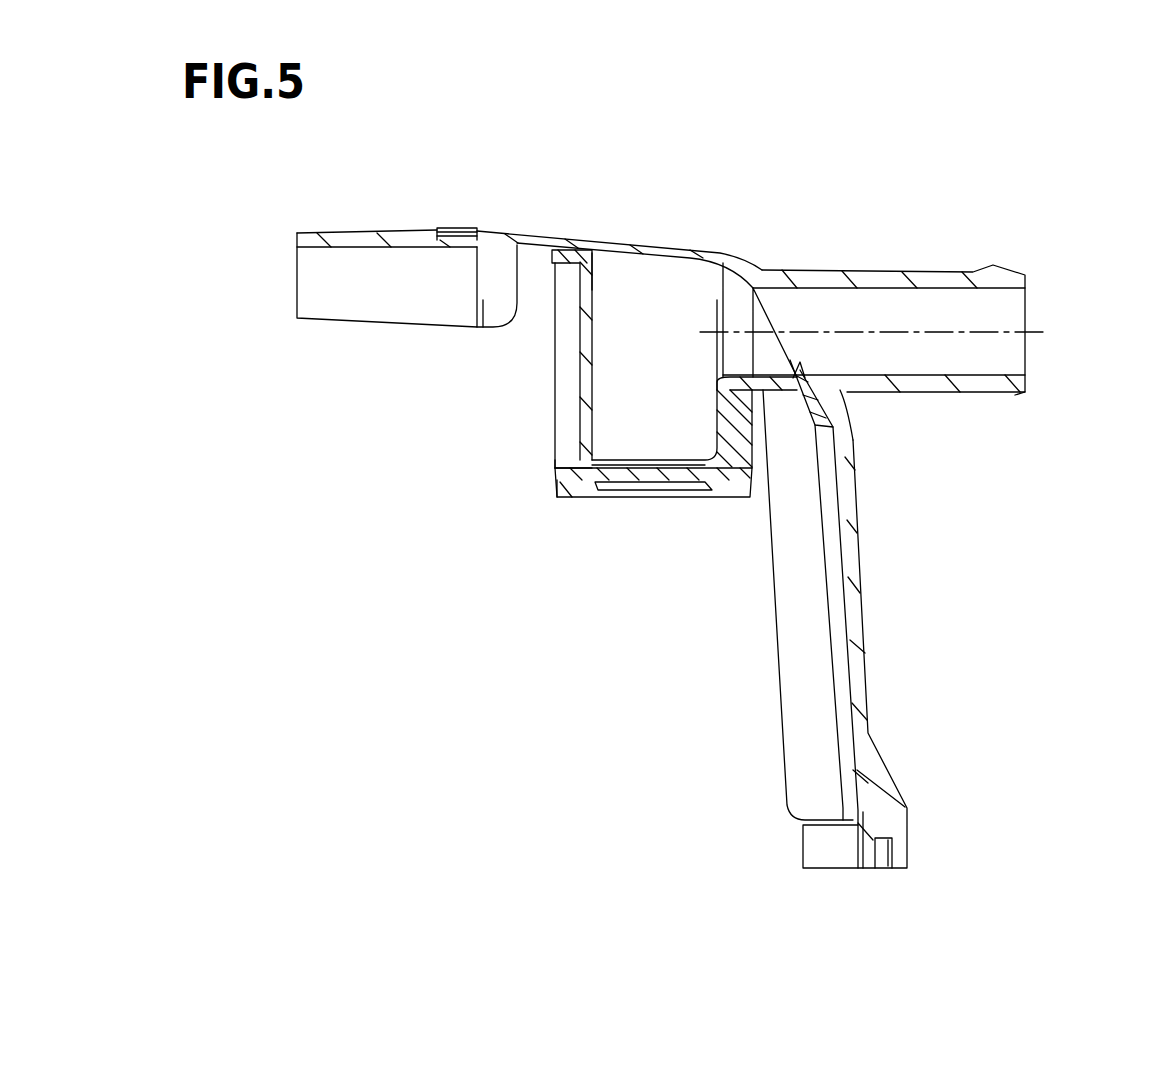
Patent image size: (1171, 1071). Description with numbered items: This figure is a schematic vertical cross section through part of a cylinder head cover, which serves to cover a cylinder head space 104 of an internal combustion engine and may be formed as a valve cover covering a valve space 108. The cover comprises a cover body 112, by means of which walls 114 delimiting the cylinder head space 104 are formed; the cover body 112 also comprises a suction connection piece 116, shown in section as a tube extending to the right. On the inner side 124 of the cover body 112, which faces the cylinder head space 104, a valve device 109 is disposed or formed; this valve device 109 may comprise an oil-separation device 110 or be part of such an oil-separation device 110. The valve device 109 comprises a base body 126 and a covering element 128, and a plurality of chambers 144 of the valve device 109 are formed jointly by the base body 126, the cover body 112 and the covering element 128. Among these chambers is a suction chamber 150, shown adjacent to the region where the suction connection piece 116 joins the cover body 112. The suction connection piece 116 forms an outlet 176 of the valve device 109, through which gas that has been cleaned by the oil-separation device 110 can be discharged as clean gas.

The cylinder head space 104 is at (602, 653).
The valve space 108 is at (637, 678).
The valve device 109 is at (555, 507).
The oil-separation device 110 is at (547, 493).
The cover body 112 is at (519, 240).
The walls 114 is at (343, 234).
The suction connection piece 116 is at (940, 278).
The inner side 124 is at (710, 715).
The base body 126 is at (585, 347).
The covering element 128 is at (582, 478).
The chambers 144 is at (620, 290).
The suction chamber 150 is at (685, 295).
The outlet 176 is at (1003, 320).